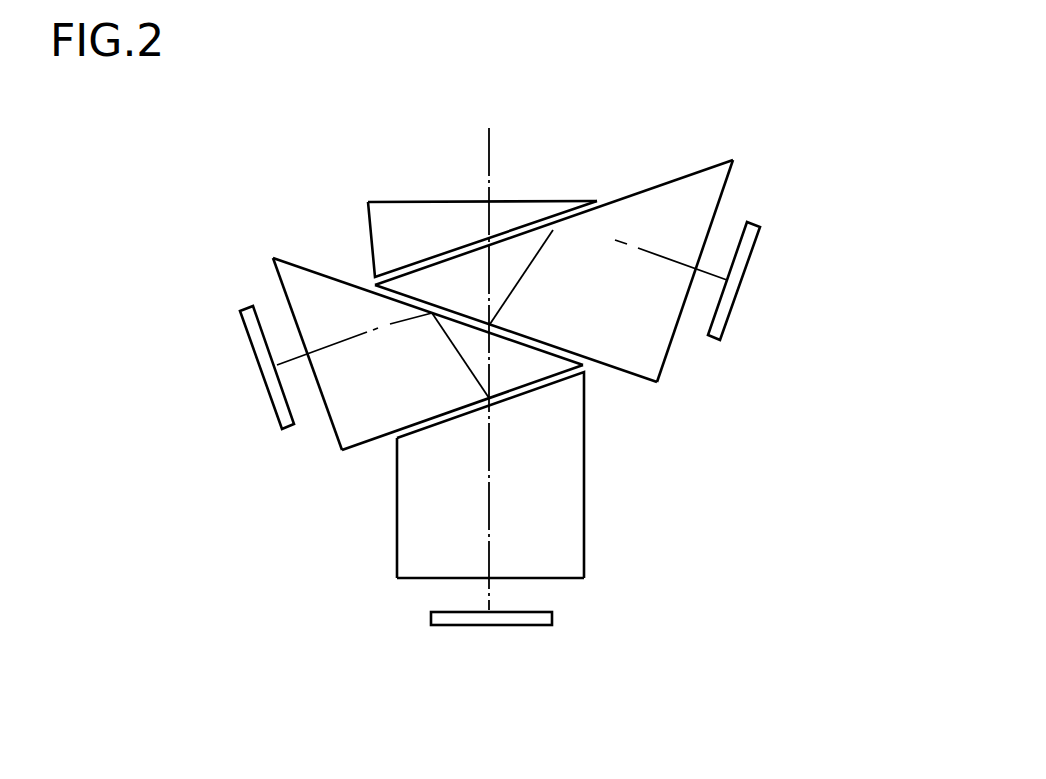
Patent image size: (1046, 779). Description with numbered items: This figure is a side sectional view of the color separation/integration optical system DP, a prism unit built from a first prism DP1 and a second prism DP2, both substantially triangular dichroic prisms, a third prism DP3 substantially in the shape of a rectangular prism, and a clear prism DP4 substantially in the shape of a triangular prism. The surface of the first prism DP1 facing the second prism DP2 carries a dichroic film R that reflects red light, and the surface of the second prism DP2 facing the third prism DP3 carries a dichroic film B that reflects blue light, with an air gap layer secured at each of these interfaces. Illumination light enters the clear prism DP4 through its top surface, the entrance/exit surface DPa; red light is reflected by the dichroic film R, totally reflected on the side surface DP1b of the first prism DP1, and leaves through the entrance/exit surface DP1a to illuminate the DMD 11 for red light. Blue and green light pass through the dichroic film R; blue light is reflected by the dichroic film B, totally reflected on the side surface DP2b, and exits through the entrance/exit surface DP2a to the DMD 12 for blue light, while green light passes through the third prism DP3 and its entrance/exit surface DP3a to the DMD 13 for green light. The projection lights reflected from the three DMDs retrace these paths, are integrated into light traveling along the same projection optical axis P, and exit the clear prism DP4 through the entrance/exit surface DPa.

The color separation/integration optical system DP is at (748, 133).
The first prism DP1 is at (651, 318).
The entrance/exit surface of the first prism DP1a is at (725, 183).
The side surface of the first prism DP1b is at (652, 190).
The second prism DP2 is at (358, 396).
The entrance/exit surface of the second prism DP2a is at (285, 293).
The side surface of the second prism DP2b is at (330, 276).
The third prism DP3 is at (562, 487).
The entrance/exit surface of the third prism DP3a is at (572, 579).
The clear prism DP4 is at (393, 213).
The entrance/exit surface of the clear prism DPa is at (436, 198).
The projection optical axis P is at (493, 141).
The DMD for red light 11 is at (750, 263).
The DMD for blue light 12 is at (277, 365).
The DMD for green light 13 is at (510, 627).
The dichroic film R is at (633, 377).
The dichroic film B is at (372, 441).